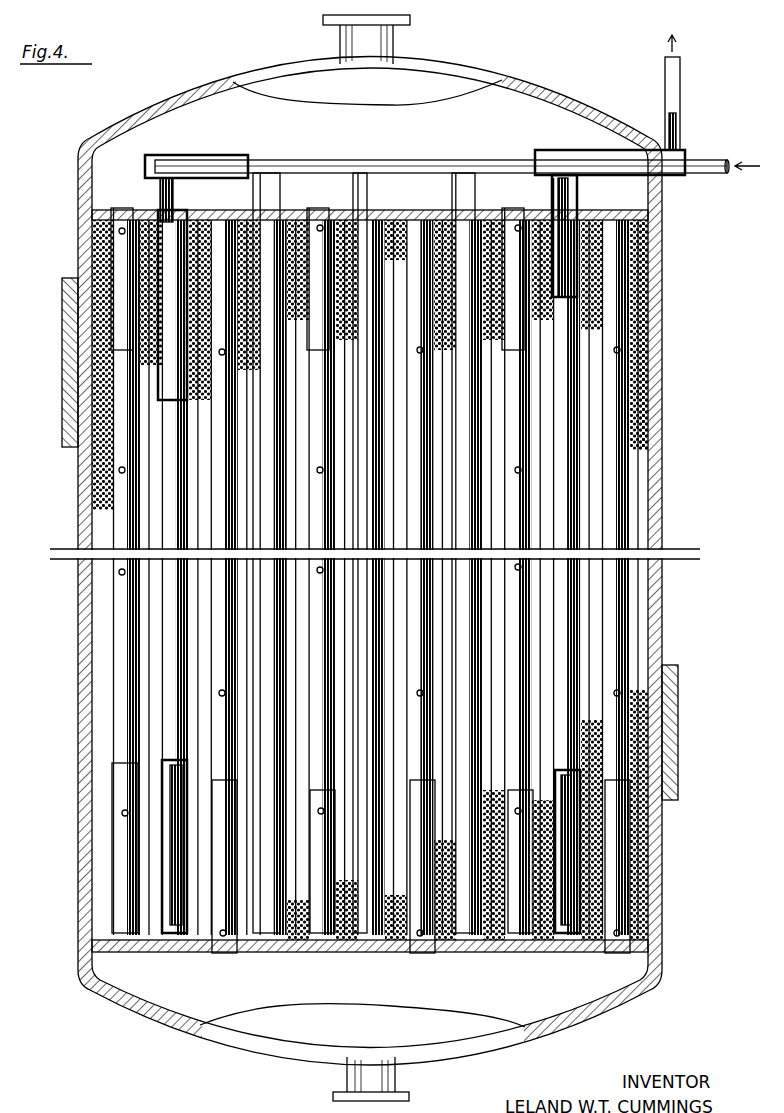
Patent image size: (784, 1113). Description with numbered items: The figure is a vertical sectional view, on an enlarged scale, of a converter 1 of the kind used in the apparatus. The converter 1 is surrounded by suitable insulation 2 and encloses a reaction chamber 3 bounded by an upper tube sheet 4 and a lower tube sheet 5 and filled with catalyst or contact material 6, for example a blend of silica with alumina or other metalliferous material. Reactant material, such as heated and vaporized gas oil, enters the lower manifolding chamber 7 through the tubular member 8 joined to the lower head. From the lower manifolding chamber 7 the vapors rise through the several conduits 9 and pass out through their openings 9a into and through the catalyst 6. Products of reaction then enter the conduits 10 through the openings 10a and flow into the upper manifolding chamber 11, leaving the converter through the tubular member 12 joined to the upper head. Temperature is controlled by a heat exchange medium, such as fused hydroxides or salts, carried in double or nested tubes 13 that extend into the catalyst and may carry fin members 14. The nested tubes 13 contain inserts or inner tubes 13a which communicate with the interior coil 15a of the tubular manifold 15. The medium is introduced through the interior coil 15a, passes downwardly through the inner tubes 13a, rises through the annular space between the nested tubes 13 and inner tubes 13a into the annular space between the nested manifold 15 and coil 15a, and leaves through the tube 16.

The converter 1 is at (660, 505).
The insulation 2 is at (66, 328).
The reaction chamber 3 is at (645, 447).
The upper tube sheet 4 is at (626, 212).
The lower tube sheet 5 is at (487, 950).
The catalyst or contact material 6 is at (650, 270).
The lower manifolding chamber 7 is at (497, 1030).
The tubular member 8 is at (348, 1070).
The conduits 9 is at (426, 215).
The openings 9a is at (640, 346).
The conduits 10 is at (120, 215).
The openings 10a is at (118, 233).
The upper manifolding chamber 11 is at (172, 120).
The tubular member 12 is at (396, 56).
The nested tubes 13 is at (181, 212).
The inner tubes 13a is at (160, 190).
The fin members 14 is at (152, 240).
The tubular manifold 15 is at (284, 137).
The interior coil 15a is at (200, 165).
The tube 16 is at (680, 85).